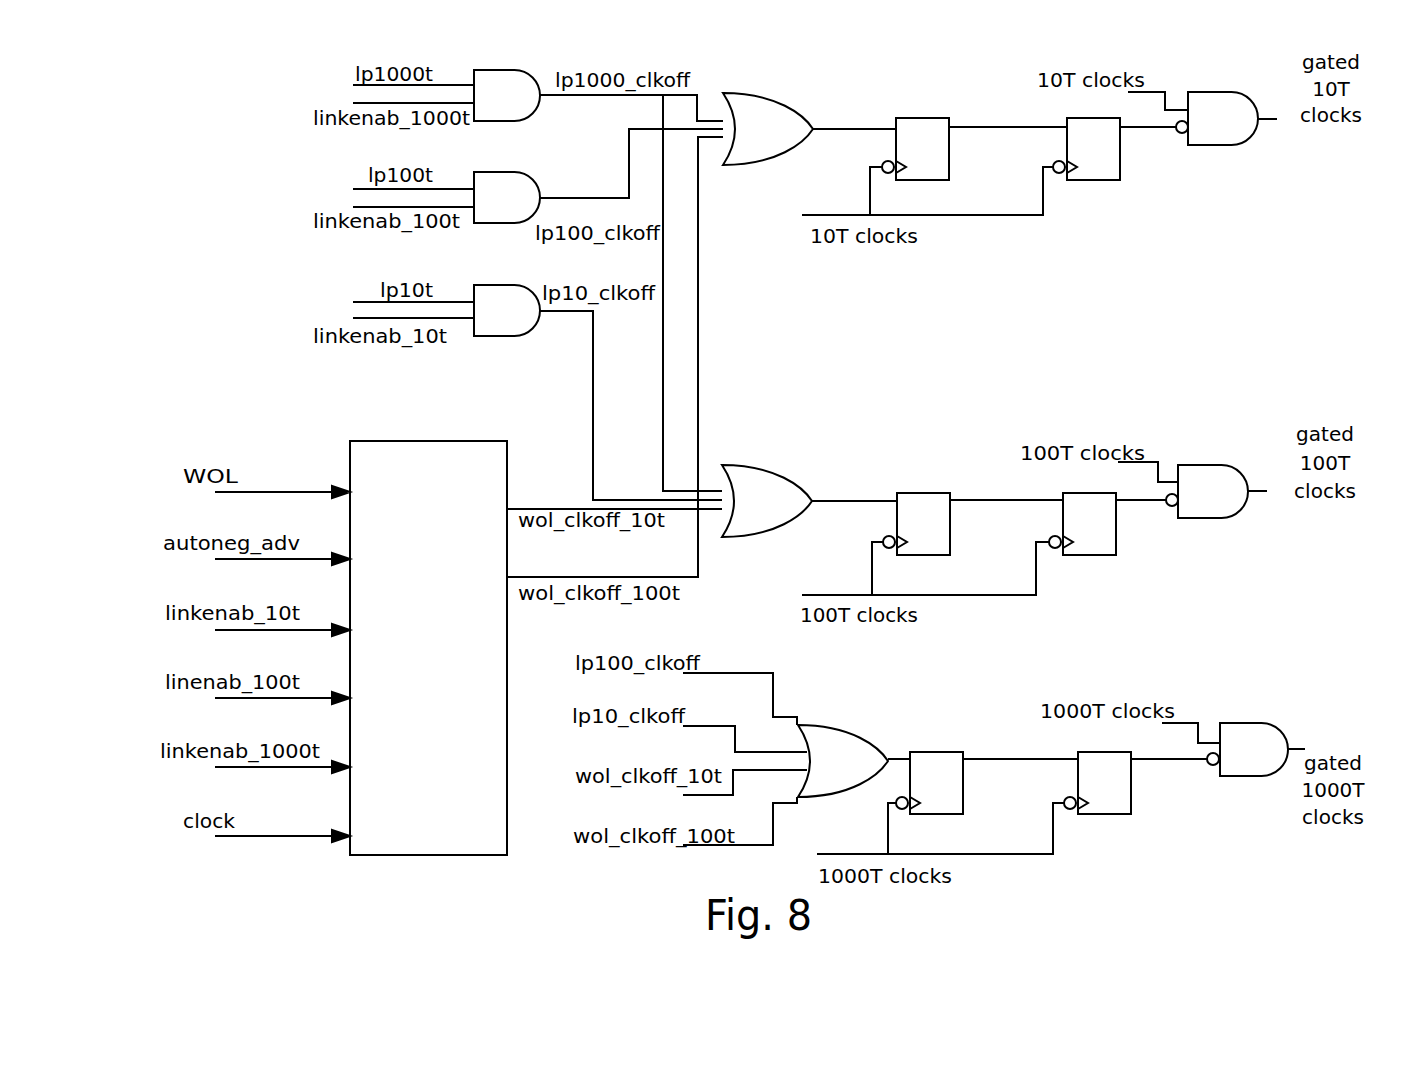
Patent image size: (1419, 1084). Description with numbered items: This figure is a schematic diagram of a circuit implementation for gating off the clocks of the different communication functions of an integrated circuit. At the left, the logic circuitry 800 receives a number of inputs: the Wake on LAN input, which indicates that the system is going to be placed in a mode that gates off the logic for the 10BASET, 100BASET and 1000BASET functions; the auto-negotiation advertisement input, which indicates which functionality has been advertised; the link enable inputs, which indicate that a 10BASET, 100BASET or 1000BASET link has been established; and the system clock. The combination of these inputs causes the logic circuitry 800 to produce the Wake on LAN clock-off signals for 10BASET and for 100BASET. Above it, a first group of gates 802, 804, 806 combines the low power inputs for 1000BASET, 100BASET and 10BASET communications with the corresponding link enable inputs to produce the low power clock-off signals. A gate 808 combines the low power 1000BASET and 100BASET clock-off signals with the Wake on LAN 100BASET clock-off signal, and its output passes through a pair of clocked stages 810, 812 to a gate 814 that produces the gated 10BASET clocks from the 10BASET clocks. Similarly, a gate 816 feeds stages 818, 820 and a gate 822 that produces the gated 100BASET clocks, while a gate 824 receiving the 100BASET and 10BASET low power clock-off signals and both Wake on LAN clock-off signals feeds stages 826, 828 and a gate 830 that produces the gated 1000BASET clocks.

The logic circuitry 800 is at (406, 628).
The AND gate (1000T link partner) 802 is at (485, 106).
The AND gate (100T link partner) 804 is at (485, 208).
The AND gate (10T link partner) 806 is at (485, 321).
The OR gate (10T clock off) 808 is at (743, 142).
The flip-flop 810 is at (900, 151).
The flip-flop 812 is at (1071, 151).
The AND gate (10T clock gating) 814 is at (1245, 133).
The OR gate (100T clock off) 816 is at (742, 510).
The flip-flop 818 is at (901, 526).
The flip-flop 820 is at (1067, 526).
The AND gate (100T clock gating) 822 is at (1235, 497).
The OR gate (1000T clock off) 824 is at (816, 772).
The flip-flop 826 is at (914, 785).
The flip-flop 828 is at (1082, 785).
The AND gate (1000T clock gating) 830 is at (1277, 758).